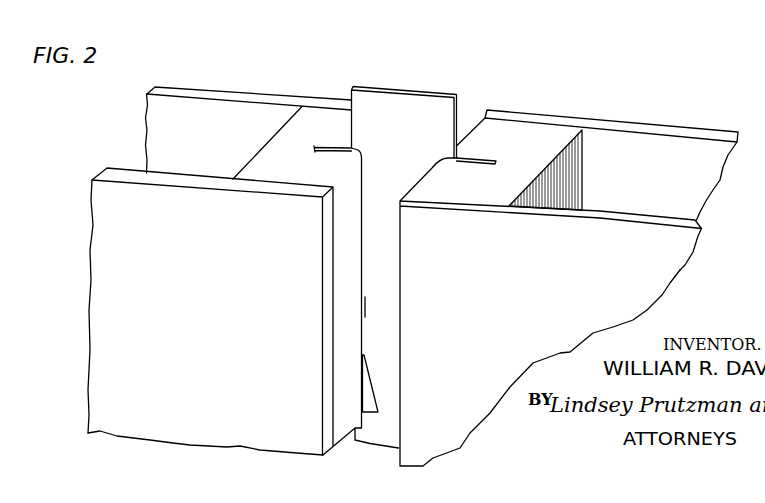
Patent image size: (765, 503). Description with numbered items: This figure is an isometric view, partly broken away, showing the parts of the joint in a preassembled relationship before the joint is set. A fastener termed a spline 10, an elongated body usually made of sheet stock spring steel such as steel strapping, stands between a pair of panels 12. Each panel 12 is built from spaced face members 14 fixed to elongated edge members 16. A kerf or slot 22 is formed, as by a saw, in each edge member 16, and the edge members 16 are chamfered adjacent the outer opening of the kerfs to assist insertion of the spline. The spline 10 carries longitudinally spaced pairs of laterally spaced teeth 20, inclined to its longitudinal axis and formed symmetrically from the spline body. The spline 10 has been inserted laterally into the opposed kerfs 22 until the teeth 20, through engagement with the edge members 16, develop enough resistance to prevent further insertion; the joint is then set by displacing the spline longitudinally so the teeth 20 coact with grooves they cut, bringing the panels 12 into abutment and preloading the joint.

The spline 10 is at (375, 436).
The panel 12 is at (212, 265).
The face member 14 is at (156, 125).
The edge member 16 is at (307, 112).
The tooth 20 is at (369, 402).
The kerf 22 is at (334, 147).